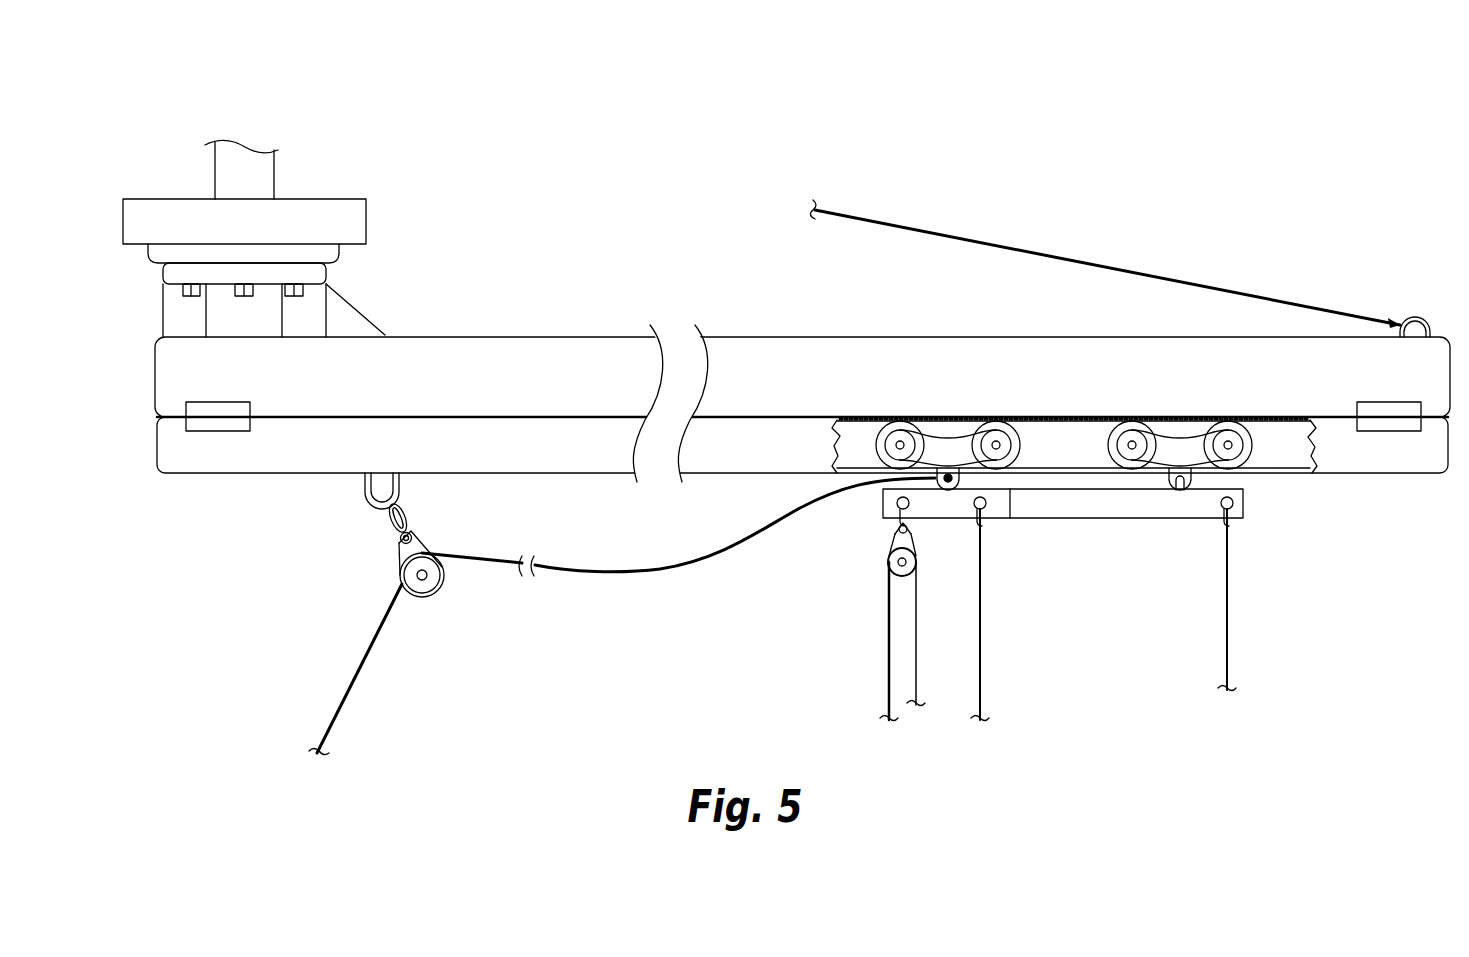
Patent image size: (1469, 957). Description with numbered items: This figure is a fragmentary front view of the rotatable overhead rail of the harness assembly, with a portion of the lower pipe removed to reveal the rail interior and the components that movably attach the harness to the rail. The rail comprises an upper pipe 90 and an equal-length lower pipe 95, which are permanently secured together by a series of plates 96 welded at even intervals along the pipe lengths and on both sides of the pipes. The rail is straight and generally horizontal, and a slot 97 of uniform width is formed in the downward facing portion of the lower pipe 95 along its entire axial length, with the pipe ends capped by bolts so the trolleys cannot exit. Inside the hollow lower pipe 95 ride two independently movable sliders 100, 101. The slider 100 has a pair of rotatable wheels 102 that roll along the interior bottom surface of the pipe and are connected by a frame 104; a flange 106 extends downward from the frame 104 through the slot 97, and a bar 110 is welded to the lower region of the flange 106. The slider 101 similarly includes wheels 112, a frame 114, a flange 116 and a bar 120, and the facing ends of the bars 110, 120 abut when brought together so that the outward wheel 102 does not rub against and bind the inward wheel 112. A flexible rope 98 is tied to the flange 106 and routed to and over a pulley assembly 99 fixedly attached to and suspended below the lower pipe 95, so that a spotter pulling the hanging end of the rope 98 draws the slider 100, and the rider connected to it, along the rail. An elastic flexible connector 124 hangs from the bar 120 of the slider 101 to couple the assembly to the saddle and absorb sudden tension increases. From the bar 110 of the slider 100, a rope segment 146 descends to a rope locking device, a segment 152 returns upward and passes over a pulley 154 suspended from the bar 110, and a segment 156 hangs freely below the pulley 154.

The upper pipe 90 is at (463, 365).
The lower pipe 95 is at (263, 452).
The plates 96 is at (200, 408).
The slot 97 is at (1307, 470).
The rope 98 is at (368, 647).
The pulley assembly 99 is at (370, 549).
The slider 100 is at (975, 428).
The slider 101 is at (1186, 420).
The wheels 102 is at (876, 424).
The frame 104 is at (962, 438).
The flange 106 is at (965, 480).
The bar 110 is at (997, 512).
The wheels 112 is at (1114, 412).
The frame 114 is at (1200, 447).
The flange 116 is at (1195, 480).
The bar 120 is at (1130, 510).
The flexible connector 124 is at (1230, 608).
The rope segment 146 is at (982, 633).
The rope segment 152 is at (917, 664).
The pulley 154 is at (890, 568).
The rope segment 156 is at (888, 658).